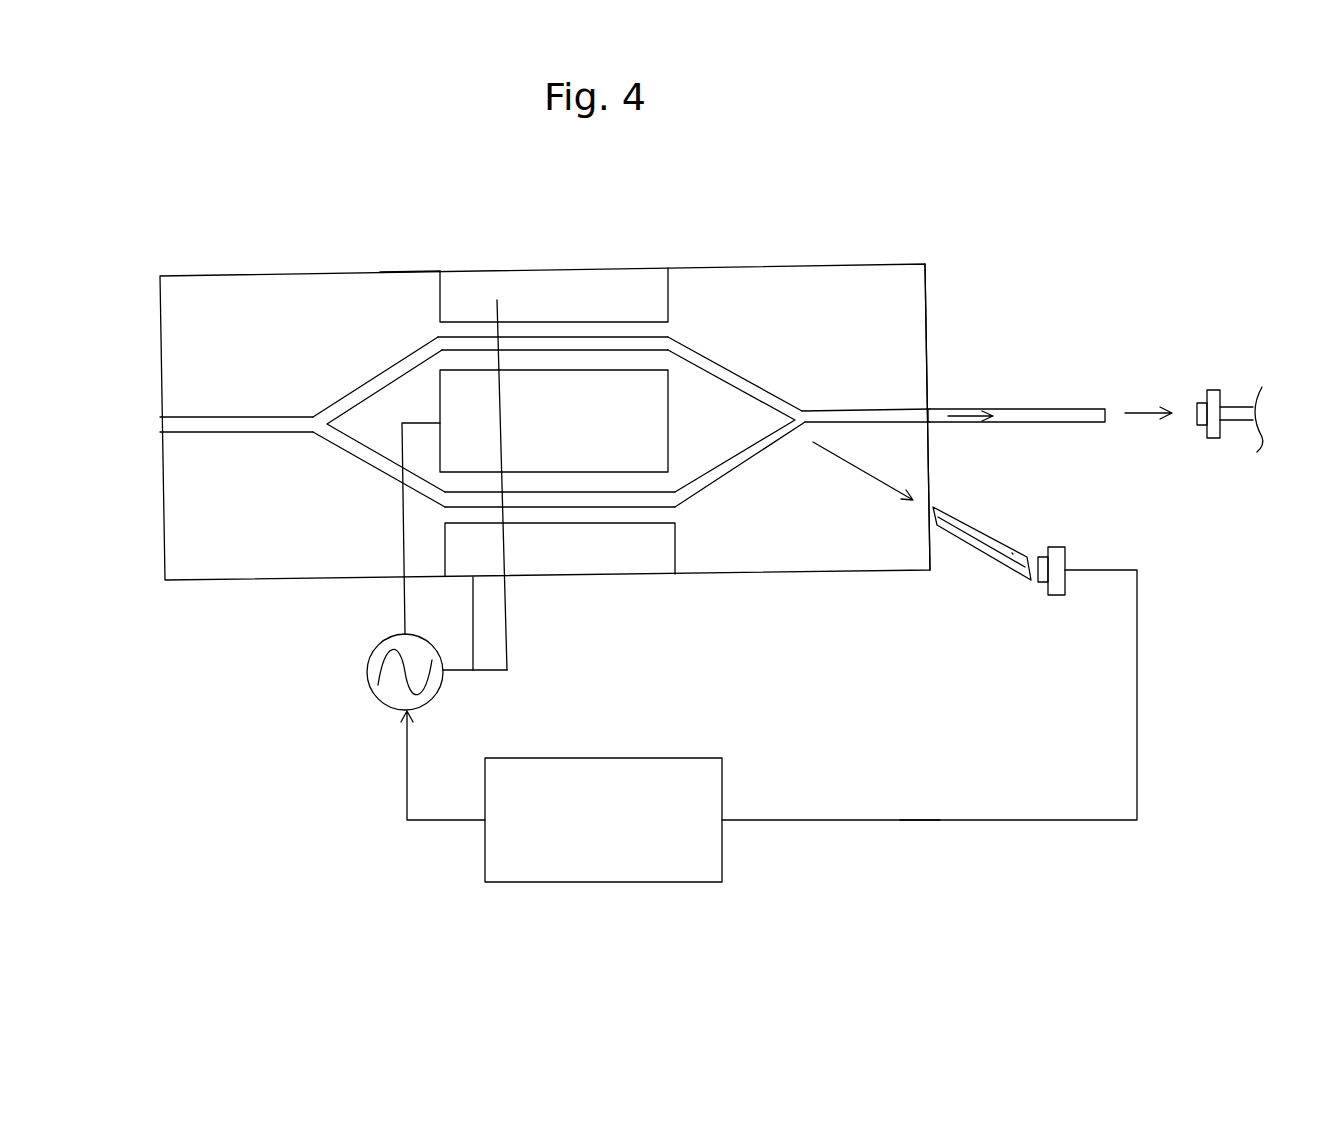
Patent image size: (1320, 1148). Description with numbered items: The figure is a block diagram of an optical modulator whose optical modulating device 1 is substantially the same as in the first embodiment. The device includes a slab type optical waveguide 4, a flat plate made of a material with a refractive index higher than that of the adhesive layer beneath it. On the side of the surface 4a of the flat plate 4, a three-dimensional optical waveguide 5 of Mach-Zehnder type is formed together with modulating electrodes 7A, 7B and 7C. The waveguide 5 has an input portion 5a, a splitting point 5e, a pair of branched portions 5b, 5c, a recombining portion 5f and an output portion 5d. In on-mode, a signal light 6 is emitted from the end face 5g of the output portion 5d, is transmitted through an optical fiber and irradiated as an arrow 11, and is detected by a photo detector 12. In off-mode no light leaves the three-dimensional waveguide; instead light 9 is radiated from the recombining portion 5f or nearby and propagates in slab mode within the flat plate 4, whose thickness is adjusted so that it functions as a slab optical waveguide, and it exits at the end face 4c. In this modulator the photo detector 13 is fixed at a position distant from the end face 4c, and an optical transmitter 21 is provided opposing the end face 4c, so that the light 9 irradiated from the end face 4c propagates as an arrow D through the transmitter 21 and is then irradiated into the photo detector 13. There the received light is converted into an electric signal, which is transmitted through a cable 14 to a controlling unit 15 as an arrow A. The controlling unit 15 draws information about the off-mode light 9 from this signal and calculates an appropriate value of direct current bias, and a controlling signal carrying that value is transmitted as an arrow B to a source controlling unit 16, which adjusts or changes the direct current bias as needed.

The optical modulating device 1 is at (848, 201).
The slab type optical waveguide 4 is at (296, 246).
The surface of the flat plate 4a is at (415, 293).
The end face of the slab waveguide 4c is at (926, 300).
The three-dimensional optical waveguide 5 is at (372, 355).
The input portion 5a is at (210, 422).
The branched portion 5b is at (567, 343).
The branched portion 5c is at (612, 497).
The output portion 5d is at (863, 413).
The splitting point 5e is at (307, 412).
The recombining portion 5f is at (802, 410).
The end face of the output portion 5g is at (930, 427).
The signal light 6 is at (958, 411).
The modulating electrode 7A is at (513, 278).
The modulating electrode 7B is at (625, 385).
The modulating electrode 7C is at (668, 548).
The light of slab propagation-mode 9 is at (853, 467).
The arrow 11 is at (1125, 412).
The photo detector 12 is at (1200, 405).
The photo detector 13 is at (1053, 594).
The cable 14 is at (1140, 665).
The controlling unit 15 is at (595, 835).
The source controlling unit 16 is at (383, 690).
The optical transmitter 21 is at (985, 525).
The arrow A is at (918, 822).
The arrow B is at (430, 822).
The arrow D is at (1012, 553).